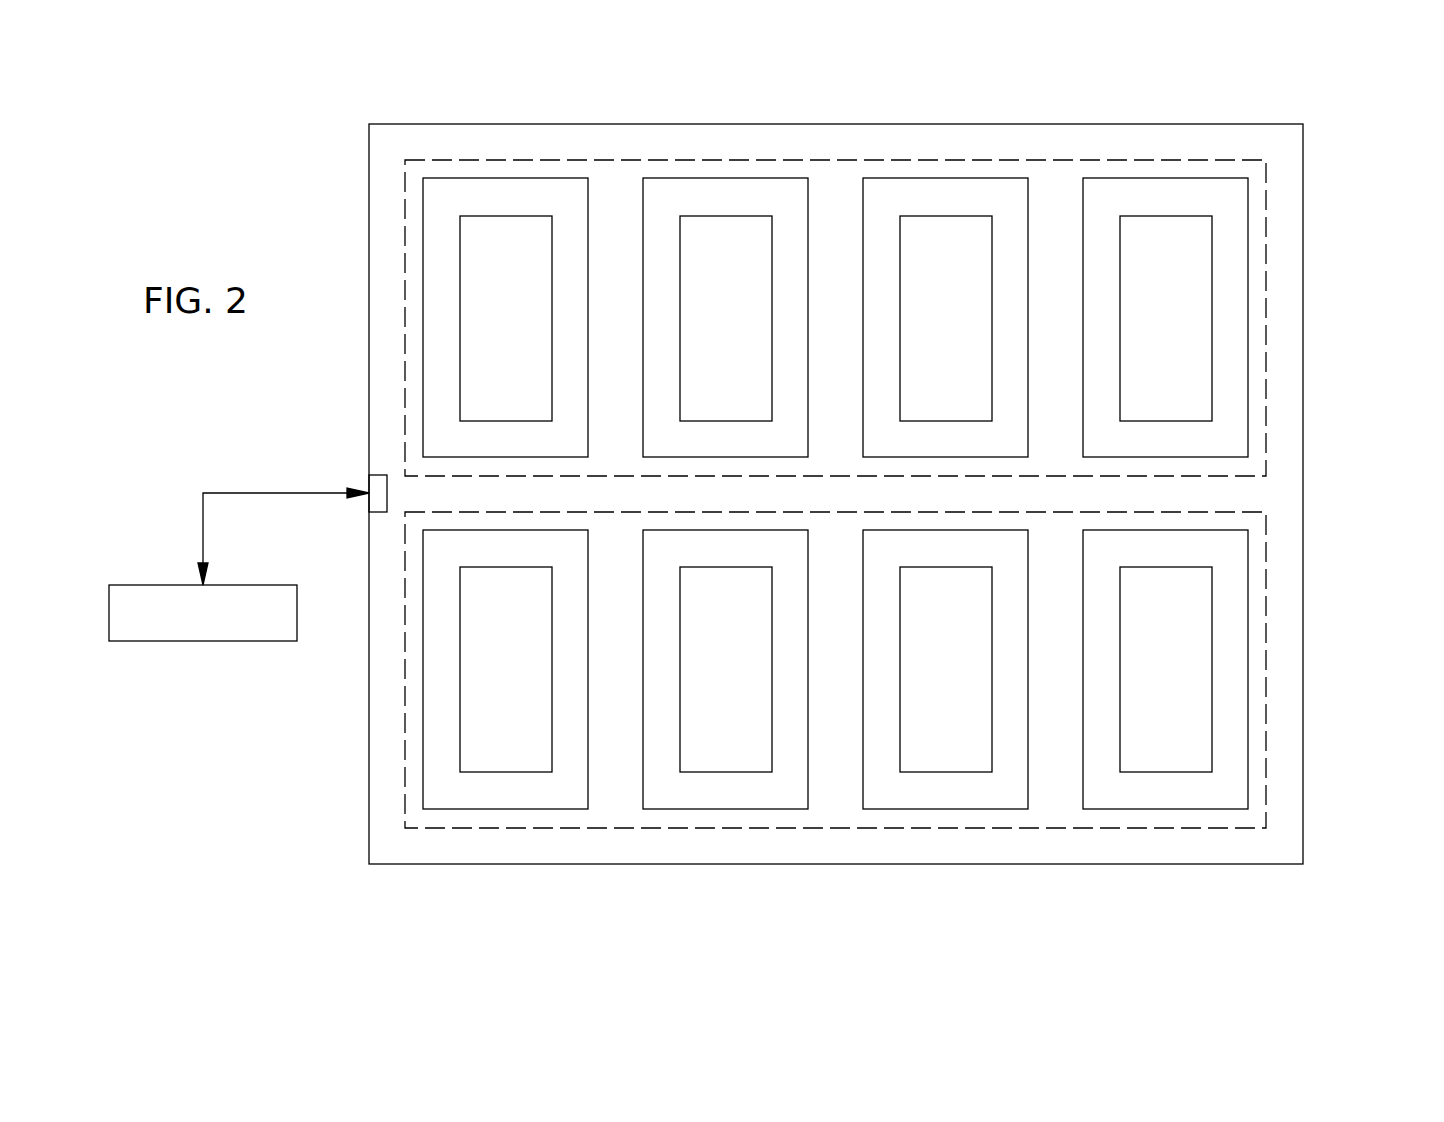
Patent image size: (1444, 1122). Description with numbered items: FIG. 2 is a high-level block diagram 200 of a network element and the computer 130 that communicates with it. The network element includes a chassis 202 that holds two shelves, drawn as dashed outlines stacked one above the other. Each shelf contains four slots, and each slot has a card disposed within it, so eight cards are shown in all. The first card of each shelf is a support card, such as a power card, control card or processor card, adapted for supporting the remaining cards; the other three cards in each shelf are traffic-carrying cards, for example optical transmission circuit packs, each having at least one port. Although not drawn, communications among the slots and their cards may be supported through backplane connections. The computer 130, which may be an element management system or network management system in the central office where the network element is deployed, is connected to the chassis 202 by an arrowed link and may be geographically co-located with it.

The lithographic system 200 is at (217, 184).
The chassis 202 is at (1303, 763).
The computer 130 is at (195, 641).